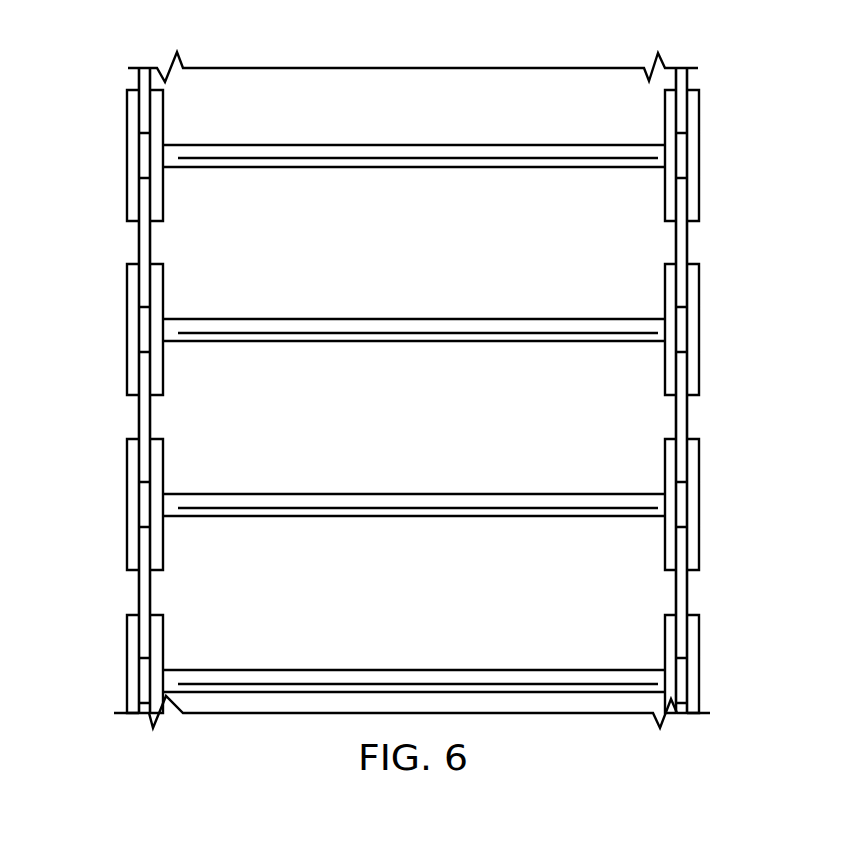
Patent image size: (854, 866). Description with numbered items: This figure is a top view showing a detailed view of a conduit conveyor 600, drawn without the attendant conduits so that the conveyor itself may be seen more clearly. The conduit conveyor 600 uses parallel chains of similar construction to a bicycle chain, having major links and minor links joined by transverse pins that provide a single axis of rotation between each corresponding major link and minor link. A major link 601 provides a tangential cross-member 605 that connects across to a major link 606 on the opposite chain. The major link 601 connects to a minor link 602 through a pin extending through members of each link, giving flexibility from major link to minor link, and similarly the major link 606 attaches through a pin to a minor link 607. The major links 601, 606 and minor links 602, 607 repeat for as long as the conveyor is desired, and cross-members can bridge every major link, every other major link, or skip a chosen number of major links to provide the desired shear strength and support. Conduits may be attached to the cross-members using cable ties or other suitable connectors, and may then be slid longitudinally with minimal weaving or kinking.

The conduit conveyor 600 is at (402, 371).
The major link 601 is at (162, 198).
The minor link 602 is at (136, 241).
The tangential cross-member 605 is at (413, 318).
The major link 606 is at (664, 199).
The minor link 607 is at (689, 242).